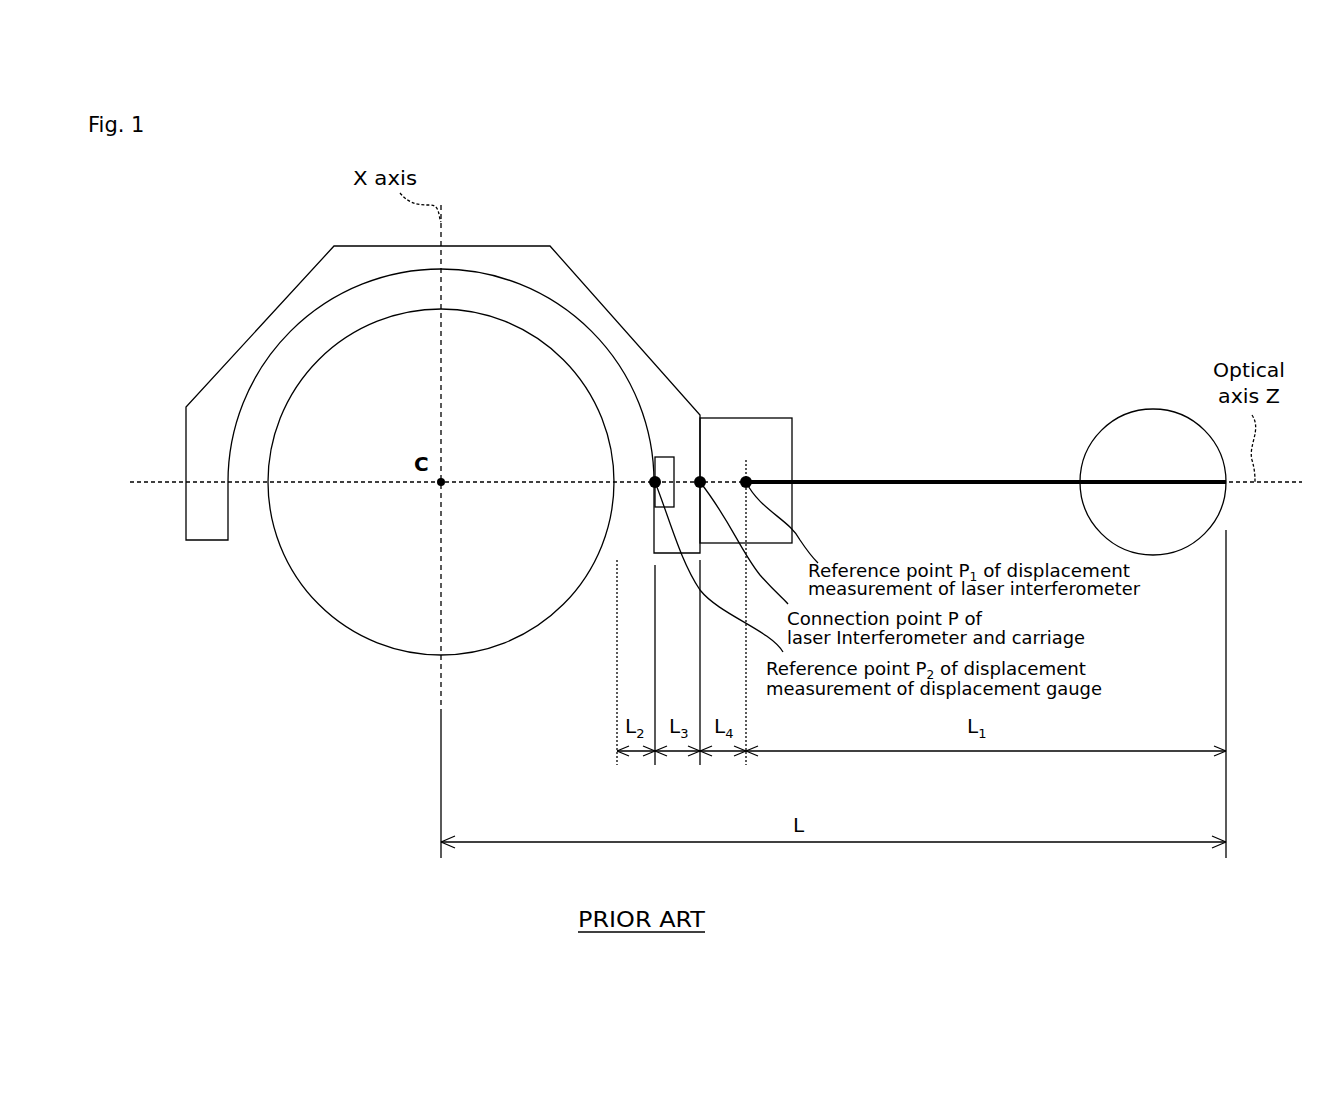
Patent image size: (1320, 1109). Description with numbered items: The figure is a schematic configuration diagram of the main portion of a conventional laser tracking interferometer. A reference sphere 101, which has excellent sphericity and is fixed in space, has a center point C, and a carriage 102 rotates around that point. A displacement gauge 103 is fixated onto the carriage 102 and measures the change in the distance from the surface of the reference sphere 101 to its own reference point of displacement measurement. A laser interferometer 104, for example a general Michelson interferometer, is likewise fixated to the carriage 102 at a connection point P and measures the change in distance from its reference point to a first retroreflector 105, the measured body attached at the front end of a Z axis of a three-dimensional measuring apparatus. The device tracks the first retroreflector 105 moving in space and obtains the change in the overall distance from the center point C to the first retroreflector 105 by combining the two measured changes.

The reference sphere 101 is at (340, 418).
The carriage 102 is at (334, 277).
The displacement gauge 103 is at (657, 470).
The laser interferometer 104 is at (770, 460).
The first retroreflector 105 is at (1153, 452).